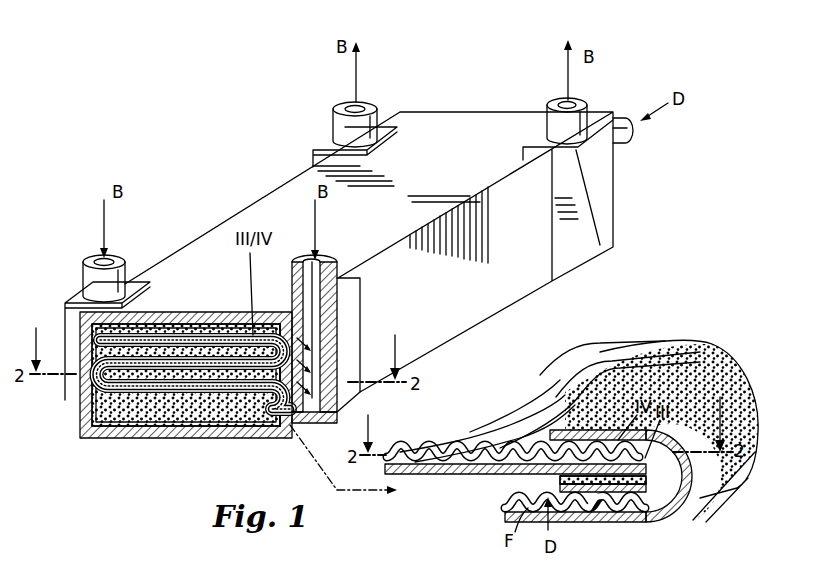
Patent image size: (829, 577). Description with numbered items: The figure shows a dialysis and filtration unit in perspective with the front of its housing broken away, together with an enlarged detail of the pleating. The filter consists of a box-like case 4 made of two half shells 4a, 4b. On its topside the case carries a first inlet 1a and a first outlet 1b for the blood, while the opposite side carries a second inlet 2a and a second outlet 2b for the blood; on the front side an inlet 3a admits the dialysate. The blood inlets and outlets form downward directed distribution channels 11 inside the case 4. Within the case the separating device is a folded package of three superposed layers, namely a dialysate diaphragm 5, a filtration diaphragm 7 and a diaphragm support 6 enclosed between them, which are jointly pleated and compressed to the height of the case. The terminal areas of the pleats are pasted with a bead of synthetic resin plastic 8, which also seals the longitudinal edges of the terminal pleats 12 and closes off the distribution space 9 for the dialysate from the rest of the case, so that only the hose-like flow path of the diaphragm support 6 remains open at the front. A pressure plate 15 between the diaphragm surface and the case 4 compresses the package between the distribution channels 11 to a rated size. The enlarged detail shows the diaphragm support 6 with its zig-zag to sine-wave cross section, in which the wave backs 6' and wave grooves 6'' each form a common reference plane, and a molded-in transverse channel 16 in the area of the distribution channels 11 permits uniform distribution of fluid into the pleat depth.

In FIG. 1, the first inlet 1a is at (127, 267).
In FIG. 1, the first outlet 1b is at (337, 125).
In FIG. 1, the second inlet 2a is at (337, 270).
In FIG. 1, the second outlet 2b is at (588, 112).
In FIG. 1, the inlet for dialysate 3a is at (632, 143).
In FIG. 1, the box-like case 4 is at (265, 198).
In FIG. 1, the half shell 4a is at (453, 113).
In FIG. 1, the half shell 4b is at (522, 113).
In FIG. 1, the diaphragm 5 is at (194, 375).
In FIG. 1a, the diaphragm 5 is at (602, 433).
In FIG. 1, the diaphragm support 6 is at (194, 376).
In FIG. 1a, the diaphragm support 6 is at (543, 407).
In FIG. 1a, the wave backs 6' is at (578, 405).
In FIG. 1a, the wave grooves 6'' is at (485, 428).
In FIG. 1, the diaphragm 7 is at (228, 330).
In FIG. 1a, the diaphragm 7 is at (425, 468).
In FIG. 1, the bead of synthetic resin plastic 8 is at (108, 407).
In FIG. 1a, the bead of synthetic resin plastic 8 is at (490, 480).
In FIG. 1, the distribution space 9 is at (108, 392).
In FIG. 1, the distribution channels 11 is at (313, 425).
In FIG. 1, the terminal pleats 12 is at (110, 334).
In FIG. 1, the pressure plate 15 is at (213, 318).
In FIG. 1, the transverse channel 16 is at (303, 343).